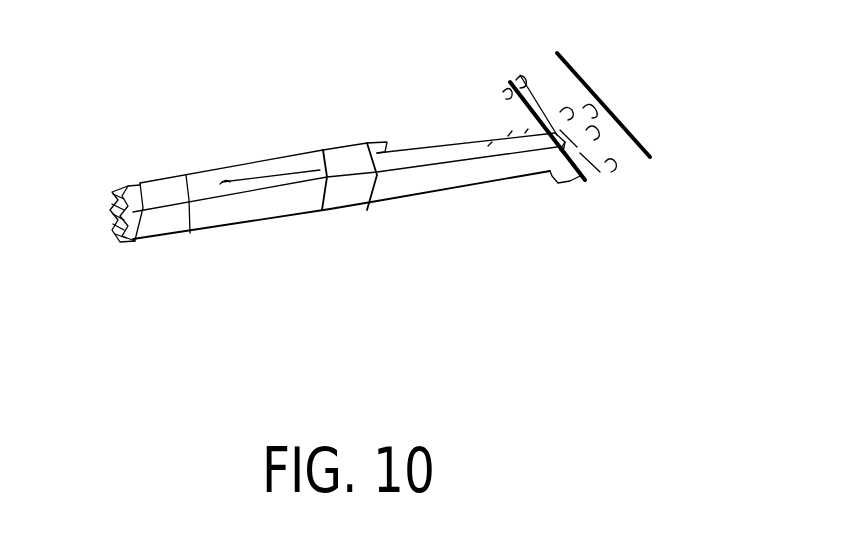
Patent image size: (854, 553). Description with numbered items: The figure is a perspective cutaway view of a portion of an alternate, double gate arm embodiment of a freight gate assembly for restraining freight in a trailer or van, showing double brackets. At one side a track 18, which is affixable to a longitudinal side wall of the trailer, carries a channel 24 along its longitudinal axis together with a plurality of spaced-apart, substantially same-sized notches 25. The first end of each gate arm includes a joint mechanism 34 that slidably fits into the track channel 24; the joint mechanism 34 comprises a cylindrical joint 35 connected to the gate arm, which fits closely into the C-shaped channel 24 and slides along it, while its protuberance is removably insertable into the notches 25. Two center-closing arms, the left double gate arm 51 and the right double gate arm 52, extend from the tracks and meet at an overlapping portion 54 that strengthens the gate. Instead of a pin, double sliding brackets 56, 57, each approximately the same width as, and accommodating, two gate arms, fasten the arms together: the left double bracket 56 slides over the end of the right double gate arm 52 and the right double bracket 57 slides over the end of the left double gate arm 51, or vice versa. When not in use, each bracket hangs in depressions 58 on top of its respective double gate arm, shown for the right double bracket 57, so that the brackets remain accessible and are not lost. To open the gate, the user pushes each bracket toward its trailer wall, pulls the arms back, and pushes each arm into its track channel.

The track 18 is at (627, 160).
The channel 24 is at (517, 83).
The notch 25 is at (586, 114).
The joint mechanism 34 is at (587, 110).
The cylindrical joint 35 is at (600, 133).
The left double gate arm 51 is at (132, 185).
The right double gate arm 52 is at (462, 178).
The overlapping portion 54 is at (218, 240).
The left double sliding bracket 56 is at (160, 188).
The right double sliding bracket 57 is at (340, 148).
The depression 58 is at (477, 147).